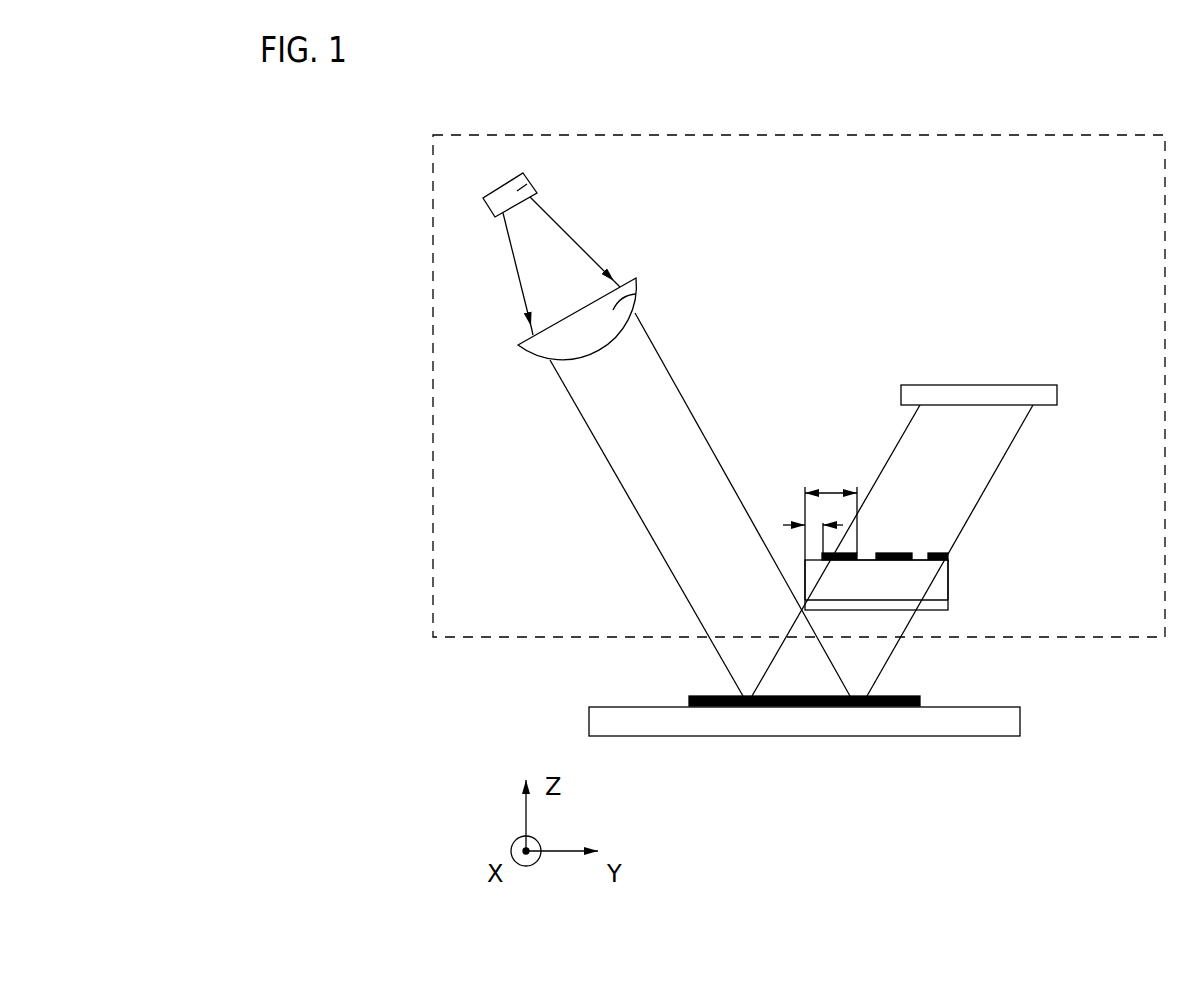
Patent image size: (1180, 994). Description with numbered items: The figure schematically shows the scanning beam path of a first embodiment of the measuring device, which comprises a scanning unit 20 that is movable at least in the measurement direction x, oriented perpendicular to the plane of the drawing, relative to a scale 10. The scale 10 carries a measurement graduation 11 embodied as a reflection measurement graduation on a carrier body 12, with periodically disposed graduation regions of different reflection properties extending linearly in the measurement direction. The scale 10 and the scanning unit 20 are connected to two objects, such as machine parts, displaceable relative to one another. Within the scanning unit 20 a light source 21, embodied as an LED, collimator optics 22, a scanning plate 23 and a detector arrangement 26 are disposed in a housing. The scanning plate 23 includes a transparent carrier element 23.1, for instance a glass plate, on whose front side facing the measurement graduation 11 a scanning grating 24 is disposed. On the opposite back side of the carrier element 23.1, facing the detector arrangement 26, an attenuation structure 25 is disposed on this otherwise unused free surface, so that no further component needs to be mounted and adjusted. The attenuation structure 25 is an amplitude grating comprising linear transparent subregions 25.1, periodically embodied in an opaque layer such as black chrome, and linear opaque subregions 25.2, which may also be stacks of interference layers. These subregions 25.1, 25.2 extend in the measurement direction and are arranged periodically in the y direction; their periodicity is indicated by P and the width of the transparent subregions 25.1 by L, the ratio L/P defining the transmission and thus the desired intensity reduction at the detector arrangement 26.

The scale 10 is at (804, 735).
The measurement graduation 11 is at (690, 697).
The carrier body 12 is at (928, 725).
The scanning unit 20 is at (432, 255).
The light source 21 is at (532, 177).
The collimator optics 22 is at (637, 299).
The scanning plate 23 is at (927, 532).
The transparent carrier element 23.1 is at (943, 573).
The scanning grating 24 is at (940, 605).
The attenuation structure 25 is at (895, 496).
The transparent subregions 25.1 is at (869, 554).
The opaque subregions 25.2 is at (900, 553).
The detector arrangement 26 is at (1050, 387).